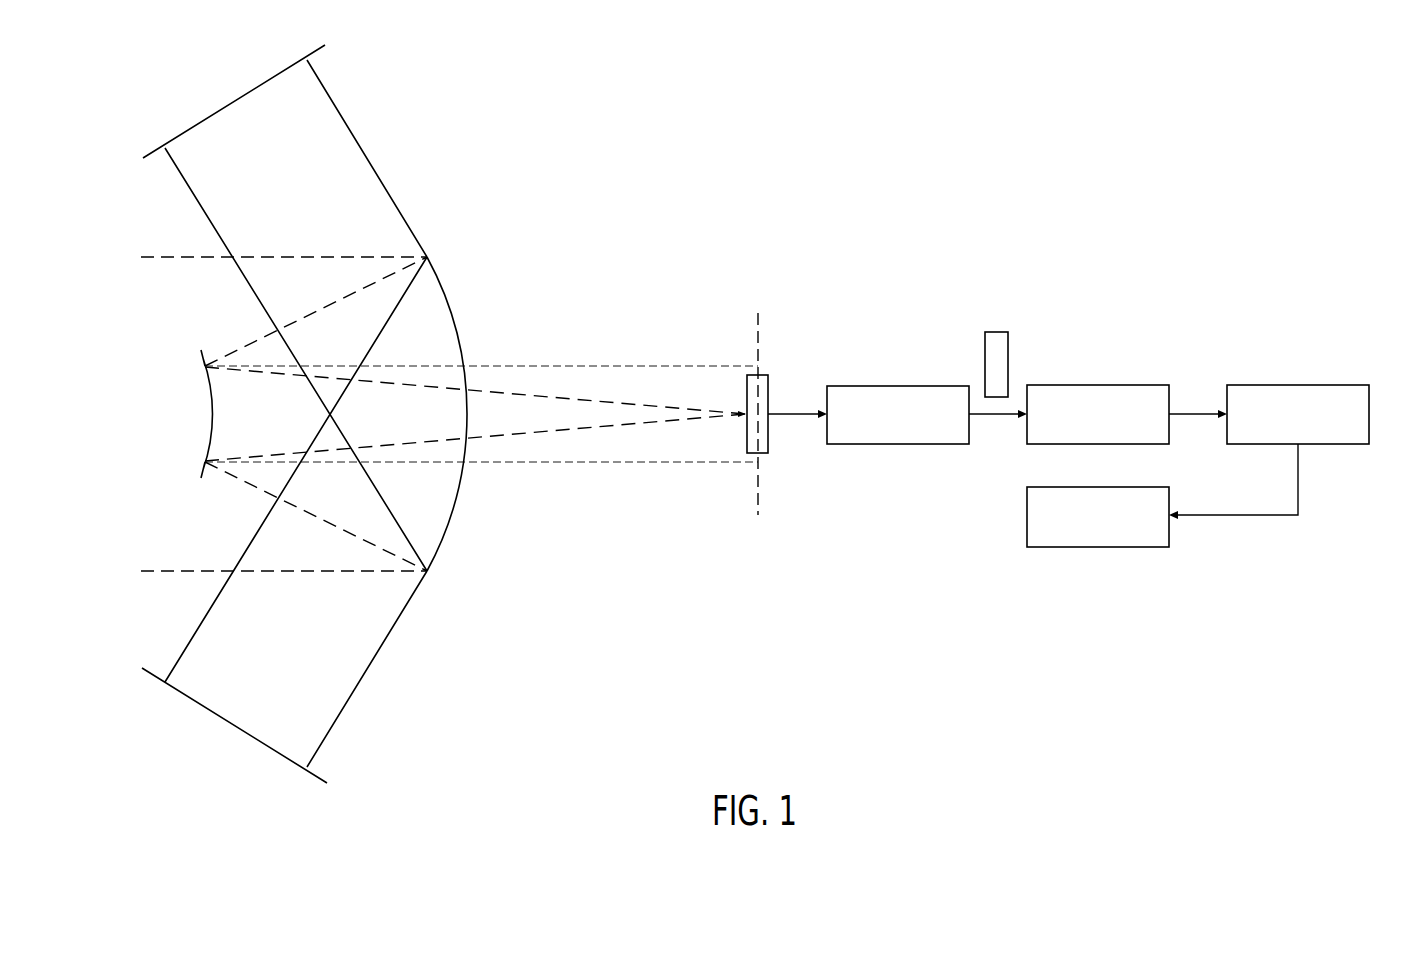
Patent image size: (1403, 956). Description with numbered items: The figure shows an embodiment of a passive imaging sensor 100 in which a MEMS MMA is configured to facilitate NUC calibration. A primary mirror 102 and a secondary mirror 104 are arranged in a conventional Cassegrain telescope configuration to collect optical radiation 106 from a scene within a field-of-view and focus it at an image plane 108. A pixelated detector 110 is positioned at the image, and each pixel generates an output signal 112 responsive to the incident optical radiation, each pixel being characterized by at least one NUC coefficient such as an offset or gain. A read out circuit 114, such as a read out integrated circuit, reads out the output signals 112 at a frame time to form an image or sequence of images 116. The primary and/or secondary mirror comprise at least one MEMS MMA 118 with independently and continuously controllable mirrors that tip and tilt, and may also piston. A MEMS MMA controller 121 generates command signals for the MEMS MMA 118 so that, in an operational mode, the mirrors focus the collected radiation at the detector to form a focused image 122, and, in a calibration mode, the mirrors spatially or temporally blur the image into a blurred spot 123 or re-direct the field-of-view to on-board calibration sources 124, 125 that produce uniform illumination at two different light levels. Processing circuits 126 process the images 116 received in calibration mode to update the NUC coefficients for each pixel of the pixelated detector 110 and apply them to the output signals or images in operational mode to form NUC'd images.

The passive imaging sensor 100 is at (1177, 161).
The primary mirror 102 is at (454, 322).
The secondary mirror 104 is at (209, 414).
The optical radiation 106 is at (190, 257).
The image plane 108 is at (758, 333).
The pixelated detector 110 is at (768, 427).
The output signal 112 is at (802, 390).
The read out circuit 114 is at (898, 386).
The image 116 is at (998, 332).
The MEMS MMA 118 is at (1098, 487).
The MEMS MMA controller 121 is at (1298, 385).
The focused image 122 is at (652, 424).
The blurred spot 123 is at (657, 366).
The on-board calibration source 124 is at (235, 98).
The on-board calibration source 125 is at (235, 729).
The processing circuits 126 is at (1098, 385).